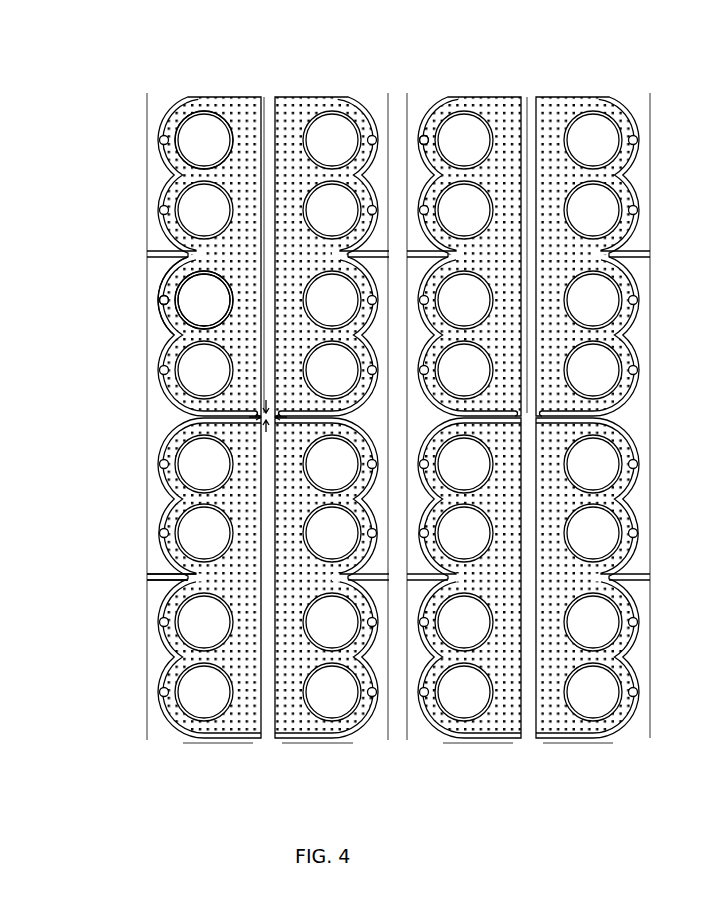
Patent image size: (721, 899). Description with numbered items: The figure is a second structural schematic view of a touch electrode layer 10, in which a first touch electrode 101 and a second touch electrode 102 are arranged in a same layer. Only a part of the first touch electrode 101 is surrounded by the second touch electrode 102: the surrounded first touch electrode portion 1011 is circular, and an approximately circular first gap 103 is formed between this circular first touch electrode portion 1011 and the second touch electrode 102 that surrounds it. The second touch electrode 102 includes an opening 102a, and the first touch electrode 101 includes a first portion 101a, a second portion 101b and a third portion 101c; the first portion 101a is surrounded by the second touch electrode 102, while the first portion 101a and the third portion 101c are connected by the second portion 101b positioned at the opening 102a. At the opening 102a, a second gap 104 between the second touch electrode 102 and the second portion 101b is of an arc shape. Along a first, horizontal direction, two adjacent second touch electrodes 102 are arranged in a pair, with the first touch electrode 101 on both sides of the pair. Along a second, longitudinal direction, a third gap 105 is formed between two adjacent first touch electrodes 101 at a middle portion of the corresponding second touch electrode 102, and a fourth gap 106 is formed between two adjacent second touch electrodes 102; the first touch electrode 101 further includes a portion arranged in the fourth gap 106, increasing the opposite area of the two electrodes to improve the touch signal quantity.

The touch electrode layer 10 is at (115, 25).
The first touch electrode 101 is at (87, 258).
The first portion 101a is at (197, 285).
The first touch electrode portion 1011 is at (156, 294).
The second portion 101b is at (160, 302).
The third portion 101c is at (153, 327).
The second touch electrode 102 is at (243, 110).
The opening 102a is at (420, 141).
The first gap 103 is at (207, 111).
The second gap 104 is at (446, 132).
The third gap 105 is at (147, 580).
The fourth gap 106 is at (272, 420).